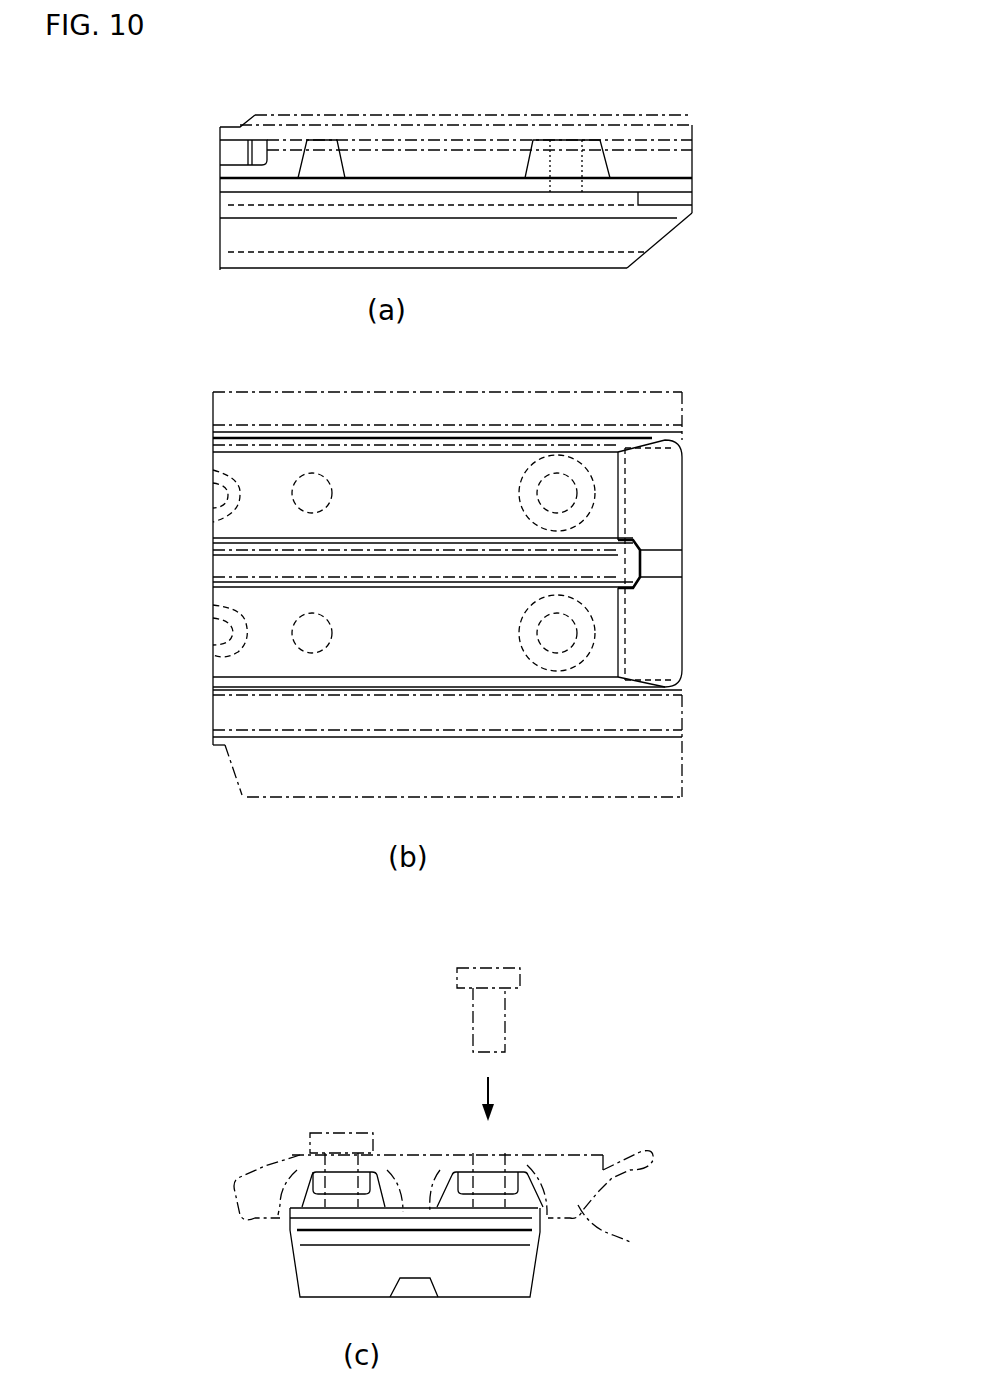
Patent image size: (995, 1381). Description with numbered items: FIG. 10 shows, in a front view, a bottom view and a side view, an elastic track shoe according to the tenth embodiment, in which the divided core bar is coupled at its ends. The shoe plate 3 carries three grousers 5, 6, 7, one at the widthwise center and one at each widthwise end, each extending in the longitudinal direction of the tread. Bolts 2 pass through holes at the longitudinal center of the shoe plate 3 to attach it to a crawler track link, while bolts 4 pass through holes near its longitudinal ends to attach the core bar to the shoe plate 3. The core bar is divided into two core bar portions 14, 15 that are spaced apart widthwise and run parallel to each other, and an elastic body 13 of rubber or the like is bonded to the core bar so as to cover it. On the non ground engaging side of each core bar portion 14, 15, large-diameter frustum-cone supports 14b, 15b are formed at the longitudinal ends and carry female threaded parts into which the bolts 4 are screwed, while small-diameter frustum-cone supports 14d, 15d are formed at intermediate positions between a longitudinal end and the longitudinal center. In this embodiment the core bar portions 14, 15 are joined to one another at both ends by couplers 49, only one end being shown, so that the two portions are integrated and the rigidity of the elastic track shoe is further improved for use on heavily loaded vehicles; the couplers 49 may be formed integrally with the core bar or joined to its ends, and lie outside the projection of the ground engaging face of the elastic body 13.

The bolt 2 is at (213, 678).
The shoe plate 3 is at (565, 123).
The bolt 4 is at (520, 980).
The grouser 5 is at (445, 392).
The grouser 6 is at (672, 548).
The grouser 7 is at (672, 732).
The elastic body 13 is at (555, 242).
The core bar portion 14 is at (297, 1212).
The support (boss) 14b is at (613, 502).
The support (boss) 14d is at (322, 472).
The core bar portion 15 is at (543, 1245).
The support (boss) 15b is at (603, 167).
The support (boss) 15d is at (345, 168).
The coupler 49 is at (672, 202).